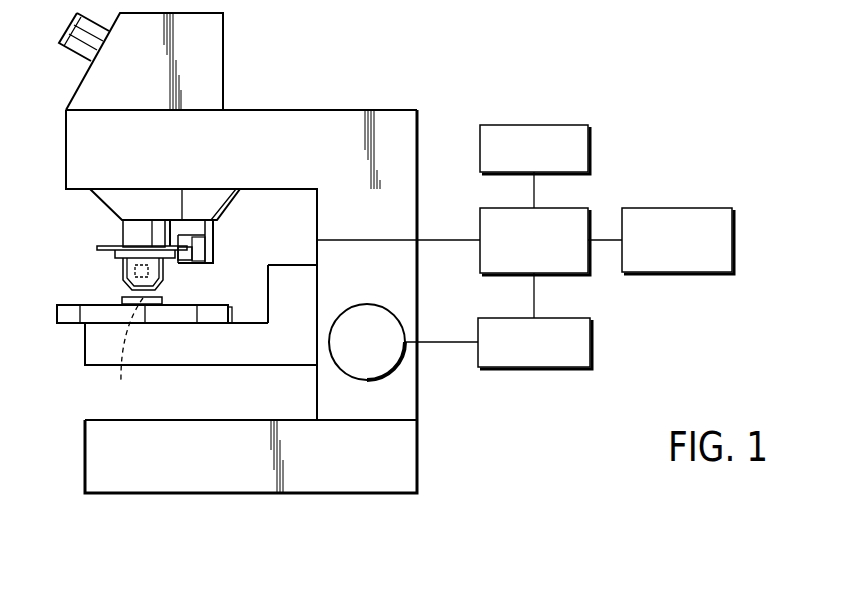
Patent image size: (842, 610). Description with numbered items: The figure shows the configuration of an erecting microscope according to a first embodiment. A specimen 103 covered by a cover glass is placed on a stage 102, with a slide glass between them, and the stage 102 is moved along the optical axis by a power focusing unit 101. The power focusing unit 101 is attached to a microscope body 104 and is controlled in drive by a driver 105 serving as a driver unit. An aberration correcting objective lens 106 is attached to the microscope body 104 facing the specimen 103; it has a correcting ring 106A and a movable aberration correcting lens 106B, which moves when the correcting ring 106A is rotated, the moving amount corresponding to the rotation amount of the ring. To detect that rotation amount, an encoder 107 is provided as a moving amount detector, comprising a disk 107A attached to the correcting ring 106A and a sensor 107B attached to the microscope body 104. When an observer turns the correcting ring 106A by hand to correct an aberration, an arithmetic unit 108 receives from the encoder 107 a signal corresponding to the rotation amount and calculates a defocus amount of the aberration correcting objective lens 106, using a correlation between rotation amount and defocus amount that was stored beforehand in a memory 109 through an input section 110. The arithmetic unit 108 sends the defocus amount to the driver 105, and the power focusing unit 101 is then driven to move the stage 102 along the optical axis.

The power focusing unit 101 is at (355, 305).
The stage 102 is at (92, 342).
The specimen 103 is at (125, 299).
The microscope body 104 is at (352, 110).
The driver 105 is at (590, 342).
The aberration correcting objective lens 106 is at (130, 236).
The correcting ring 106A is at (120, 253).
The aberration correcting lens 106B is at (125, 354).
The encoder 107 is at (196, 266).
The disk 107A is at (182, 258).
The sensor 107B is at (200, 240).
The arithmetic unit 108 is at (578, 265).
The memory 109 is at (590, 153).
The input section 110 is at (735, 236).